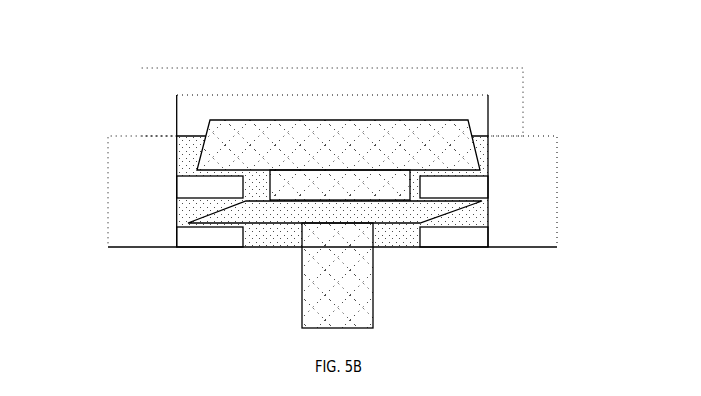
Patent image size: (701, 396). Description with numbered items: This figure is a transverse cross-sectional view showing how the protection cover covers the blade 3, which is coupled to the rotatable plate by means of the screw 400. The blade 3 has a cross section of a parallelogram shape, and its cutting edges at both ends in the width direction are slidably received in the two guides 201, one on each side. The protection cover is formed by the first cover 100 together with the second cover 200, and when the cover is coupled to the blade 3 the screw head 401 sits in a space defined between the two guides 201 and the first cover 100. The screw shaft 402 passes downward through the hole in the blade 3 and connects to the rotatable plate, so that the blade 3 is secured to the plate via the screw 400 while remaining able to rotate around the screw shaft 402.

The first cover 100 is at (385, 59).
The second cover 200 is at (120, 158).
The guide 201 is at (193, 237).
The blade 3 is at (276, 212).
The screw 400 is at (438, 103).
The screw head 401 is at (272, 133).
The screw shaft 402 is at (358, 290).